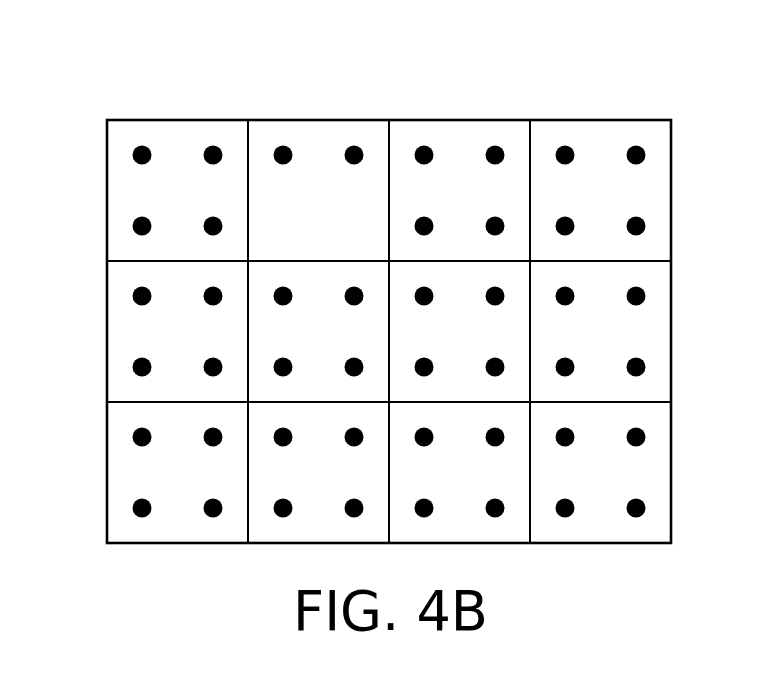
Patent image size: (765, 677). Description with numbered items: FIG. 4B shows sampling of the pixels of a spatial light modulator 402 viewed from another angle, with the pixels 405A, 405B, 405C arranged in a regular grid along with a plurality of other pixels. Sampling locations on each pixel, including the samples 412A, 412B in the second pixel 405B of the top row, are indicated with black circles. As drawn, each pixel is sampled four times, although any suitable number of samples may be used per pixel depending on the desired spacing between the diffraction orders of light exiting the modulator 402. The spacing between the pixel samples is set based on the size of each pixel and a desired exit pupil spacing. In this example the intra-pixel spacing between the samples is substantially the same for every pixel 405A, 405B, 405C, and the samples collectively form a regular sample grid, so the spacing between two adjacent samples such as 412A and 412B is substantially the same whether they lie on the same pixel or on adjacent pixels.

The sensor array / pixel grid 402 is at (117, 52).
The pixel cell 405A is at (117, 118).
The pixel cell 405B is at (258, 118).
The pixel cell 405C is at (400, 118).
The sample 412A is at (290, 163).
The sample 412B is at (360, 163).